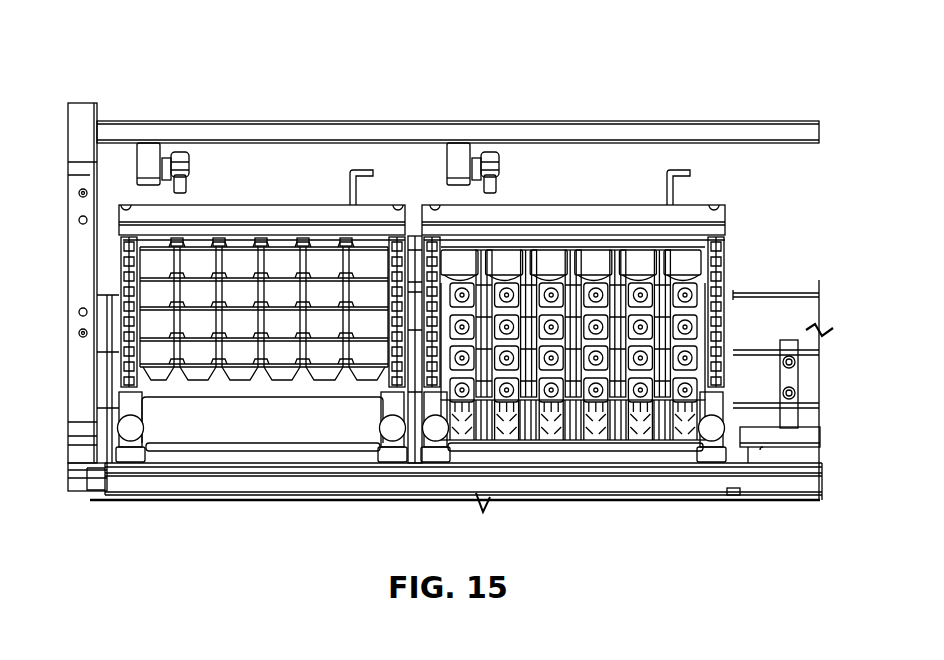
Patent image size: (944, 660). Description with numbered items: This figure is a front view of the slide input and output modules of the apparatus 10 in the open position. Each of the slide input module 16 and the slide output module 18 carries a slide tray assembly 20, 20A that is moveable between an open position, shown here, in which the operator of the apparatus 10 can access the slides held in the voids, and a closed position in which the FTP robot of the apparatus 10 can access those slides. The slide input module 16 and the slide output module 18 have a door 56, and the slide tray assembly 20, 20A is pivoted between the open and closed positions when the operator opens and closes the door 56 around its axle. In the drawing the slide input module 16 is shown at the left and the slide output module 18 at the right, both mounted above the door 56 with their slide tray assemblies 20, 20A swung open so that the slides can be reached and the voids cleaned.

The apparatus 10 is at (206, 90).
The slide input module 16 is at (280, 186).
The slide output module 18 is at (598, 186).
The slide tray assembly 20 is at (716, 257).
The slide tray assembly 20A is at (260, 334).
The door 56 is at (200, 460).